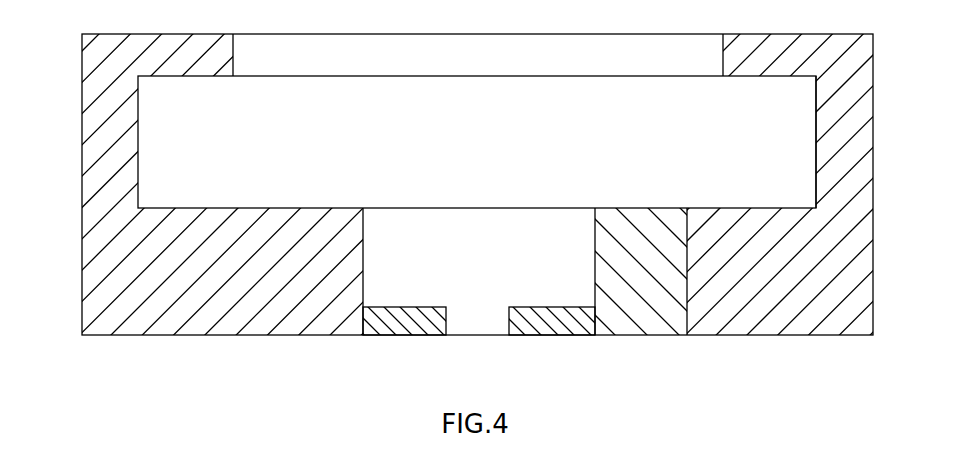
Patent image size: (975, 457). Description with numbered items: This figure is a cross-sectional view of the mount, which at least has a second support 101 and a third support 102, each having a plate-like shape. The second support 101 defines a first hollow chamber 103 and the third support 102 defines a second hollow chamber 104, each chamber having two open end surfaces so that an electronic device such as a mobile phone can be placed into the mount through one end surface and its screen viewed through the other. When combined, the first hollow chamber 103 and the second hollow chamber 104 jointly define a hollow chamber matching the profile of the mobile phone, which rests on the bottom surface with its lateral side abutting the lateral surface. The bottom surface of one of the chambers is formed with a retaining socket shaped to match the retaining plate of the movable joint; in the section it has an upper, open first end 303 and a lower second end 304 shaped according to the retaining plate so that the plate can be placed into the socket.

The second support 101 is at (120, 206).
The third support 102 is at (847, 157).
The first hollow chamber 103 is at (237, 108).
The second hollow chamber 104 is at (722, 137).
The first end 303 is at (445, 208).
The second end 304 is at (478, 327).